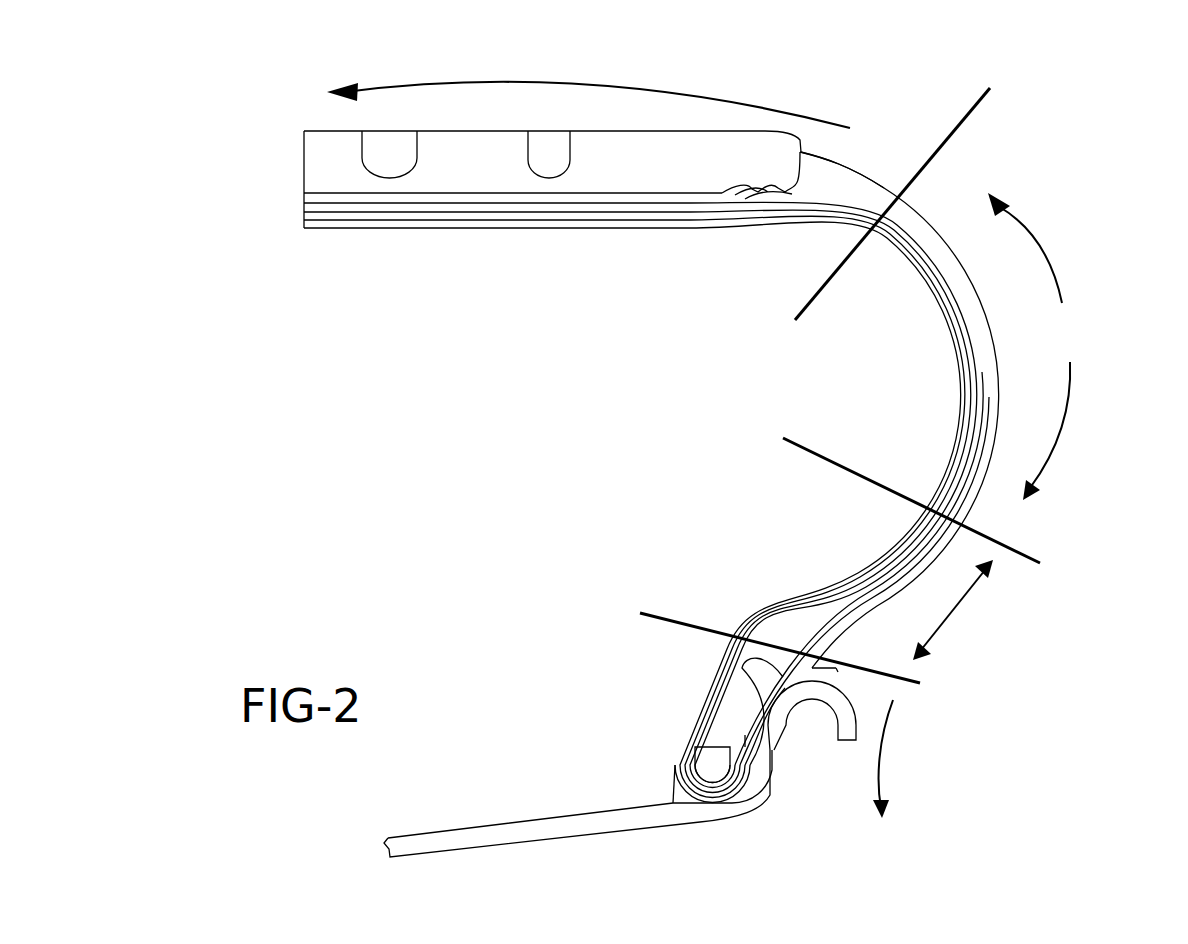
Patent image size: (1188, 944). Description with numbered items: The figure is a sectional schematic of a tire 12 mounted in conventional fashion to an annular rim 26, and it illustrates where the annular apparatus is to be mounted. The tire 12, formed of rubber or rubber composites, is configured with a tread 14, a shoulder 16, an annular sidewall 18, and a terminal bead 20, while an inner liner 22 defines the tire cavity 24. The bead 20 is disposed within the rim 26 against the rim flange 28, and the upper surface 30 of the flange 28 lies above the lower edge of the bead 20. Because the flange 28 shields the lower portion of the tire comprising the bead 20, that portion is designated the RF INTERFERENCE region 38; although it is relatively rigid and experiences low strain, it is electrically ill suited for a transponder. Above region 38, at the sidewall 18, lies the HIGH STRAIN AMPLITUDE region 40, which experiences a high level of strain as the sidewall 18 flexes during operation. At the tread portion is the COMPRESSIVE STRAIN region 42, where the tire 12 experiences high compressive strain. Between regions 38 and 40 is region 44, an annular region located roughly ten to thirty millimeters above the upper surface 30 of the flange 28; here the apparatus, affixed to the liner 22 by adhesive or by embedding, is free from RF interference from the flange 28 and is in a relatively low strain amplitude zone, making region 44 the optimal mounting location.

The tire 12 is at (1120, 160).
The tread 14 is at (323, 152).
The shoulder 16 is at (877, 200).
The annular sidewall 18 is at (1000, 385).
The terminal bead 20 is at (713, 760).
The inner liner 22 is at (958, 333).
The tire cavity 24 is at (670, 458).
The annular rim 26 is at (488, 838).
The rim flange 28 is at (773, 757).
The upper surface of the flange 30 is at (722, 676).
The RF INTERFERENCE region 38 is at (887, 720).
The HIGH STRAIN AMPLITUDE region 40 is at (1070, 398).
The COMPRESSIVE STRAIN region 42 is at (735, 100).
The mounting region 44 is at (963, 612).